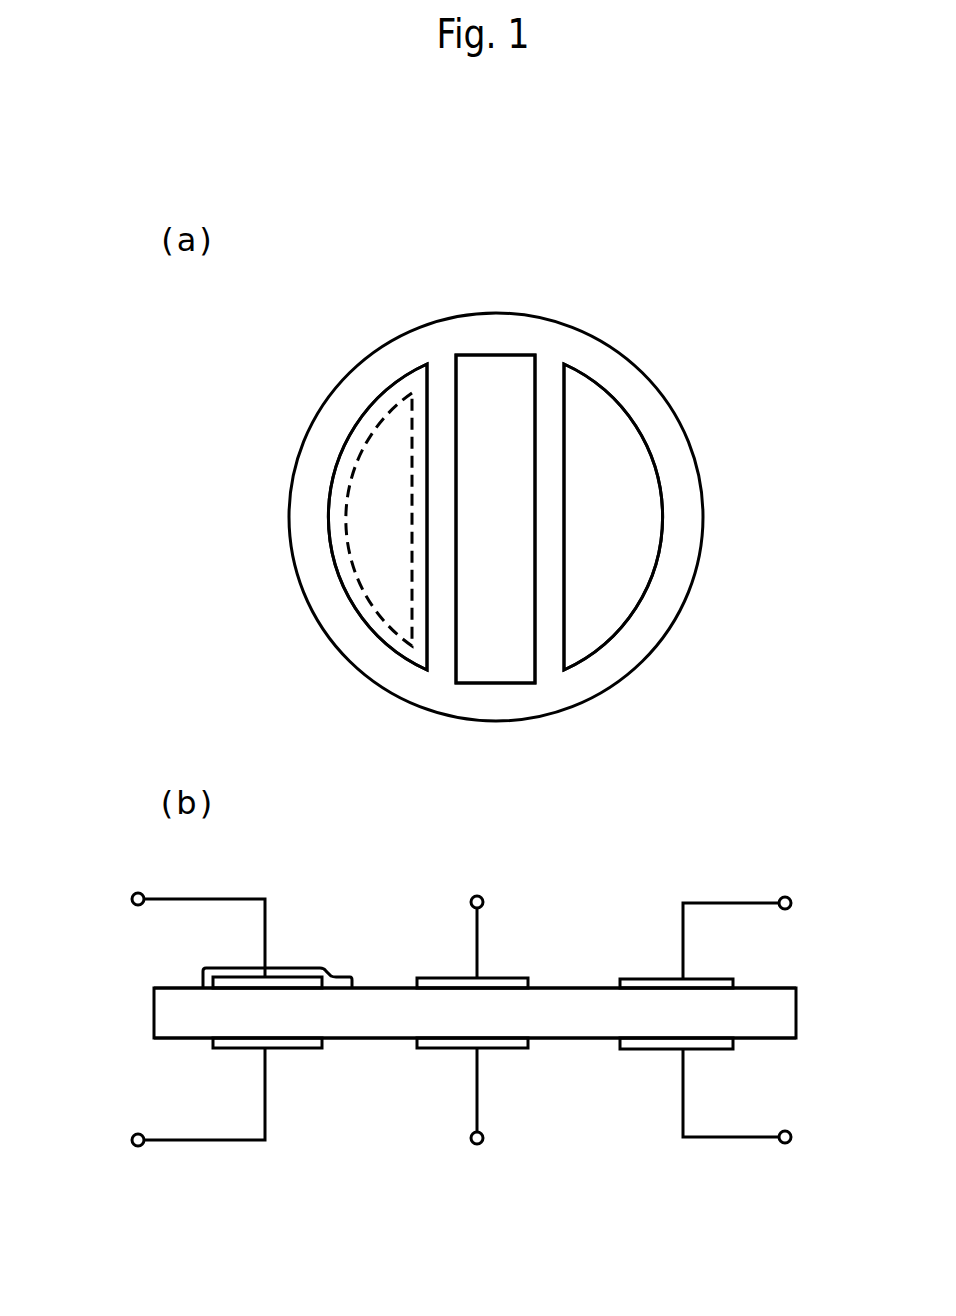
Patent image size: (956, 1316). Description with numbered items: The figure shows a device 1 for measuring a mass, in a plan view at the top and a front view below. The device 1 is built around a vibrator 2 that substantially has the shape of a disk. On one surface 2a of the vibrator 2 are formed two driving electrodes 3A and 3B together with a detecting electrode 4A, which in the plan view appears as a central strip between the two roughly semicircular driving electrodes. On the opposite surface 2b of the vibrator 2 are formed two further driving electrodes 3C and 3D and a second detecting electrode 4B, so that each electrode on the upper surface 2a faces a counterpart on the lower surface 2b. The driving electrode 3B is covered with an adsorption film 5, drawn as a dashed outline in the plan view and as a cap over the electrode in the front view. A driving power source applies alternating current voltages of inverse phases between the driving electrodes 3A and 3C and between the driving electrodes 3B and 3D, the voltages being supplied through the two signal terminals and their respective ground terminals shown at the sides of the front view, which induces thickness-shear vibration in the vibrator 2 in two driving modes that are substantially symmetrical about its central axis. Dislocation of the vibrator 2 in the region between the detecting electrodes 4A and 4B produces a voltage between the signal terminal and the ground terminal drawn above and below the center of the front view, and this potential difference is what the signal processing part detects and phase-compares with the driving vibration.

The device of measuring a mass 1 is at (661, 373).
The vibrator 2 is at (685, 476).
The surface of the vibrator 2a is at (550, 350).
The surface of the vibrator 2b is at (577, 1040).
The driving electrode 3A is at (620, 443).
The driving electrode 3B is at (398, 410).
The driving electrode 3C is at (723, 1050).
The driving electrode 3D is at (240, 1043).
The detecting electrode 4A is at (485, 378).
The detecting electrode 4B is at (438, 1045).
The adsorption film 5 is at (350, 447).